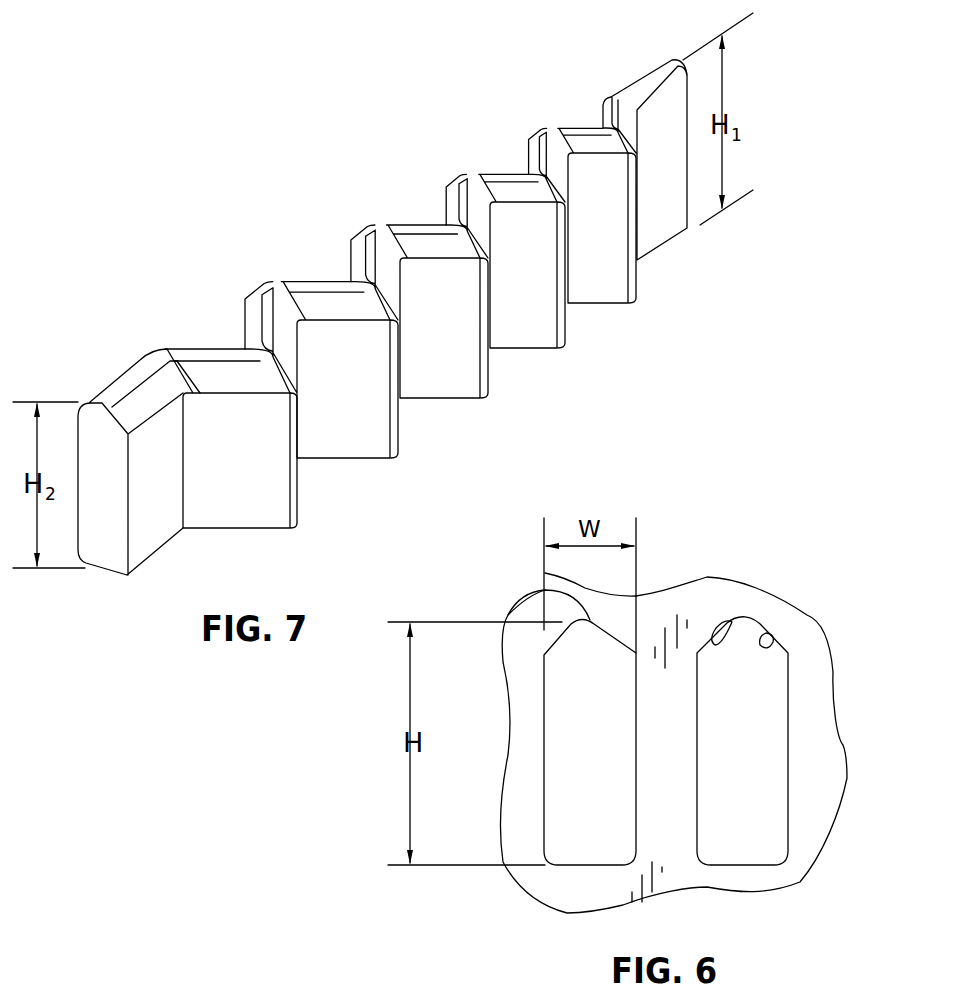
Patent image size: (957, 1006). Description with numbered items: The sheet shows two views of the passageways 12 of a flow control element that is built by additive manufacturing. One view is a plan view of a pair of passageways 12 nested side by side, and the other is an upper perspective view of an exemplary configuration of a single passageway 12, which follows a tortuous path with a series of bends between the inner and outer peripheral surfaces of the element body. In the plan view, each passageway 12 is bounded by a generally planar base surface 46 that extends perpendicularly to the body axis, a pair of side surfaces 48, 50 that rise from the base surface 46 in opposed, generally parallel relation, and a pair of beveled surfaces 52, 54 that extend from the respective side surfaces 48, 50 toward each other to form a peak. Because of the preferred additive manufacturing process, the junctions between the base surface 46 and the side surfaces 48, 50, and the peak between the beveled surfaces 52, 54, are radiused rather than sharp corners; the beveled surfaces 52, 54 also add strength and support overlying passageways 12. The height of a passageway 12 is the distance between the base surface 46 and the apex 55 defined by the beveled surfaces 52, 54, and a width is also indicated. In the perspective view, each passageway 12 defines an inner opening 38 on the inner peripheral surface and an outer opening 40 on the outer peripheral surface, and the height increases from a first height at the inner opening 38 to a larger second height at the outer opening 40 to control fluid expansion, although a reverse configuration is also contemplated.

In FIG. 7, the passageway 12 is at (108, 547).
In FIG. 6, the passageway 12 is at (588, 740).
In FIG. 7, the inner opening 38 is at (688, 190).
In FIG. 7, the outer opening 40 is at (90, 415).
In FIG. 6, the base surface 46 is at (590, 865).
In FIG. 6, the side surface 48 is at (698, 812).
In FIG. 6, the side surface 50 is at (788, 778).
In FIG. 6, the beveled surface 52 is at (731, 622).
In FIG. 6, the beveled surface 54 is at (766, 633).
In FIG. 6, the apex 55 is at (545, 573).